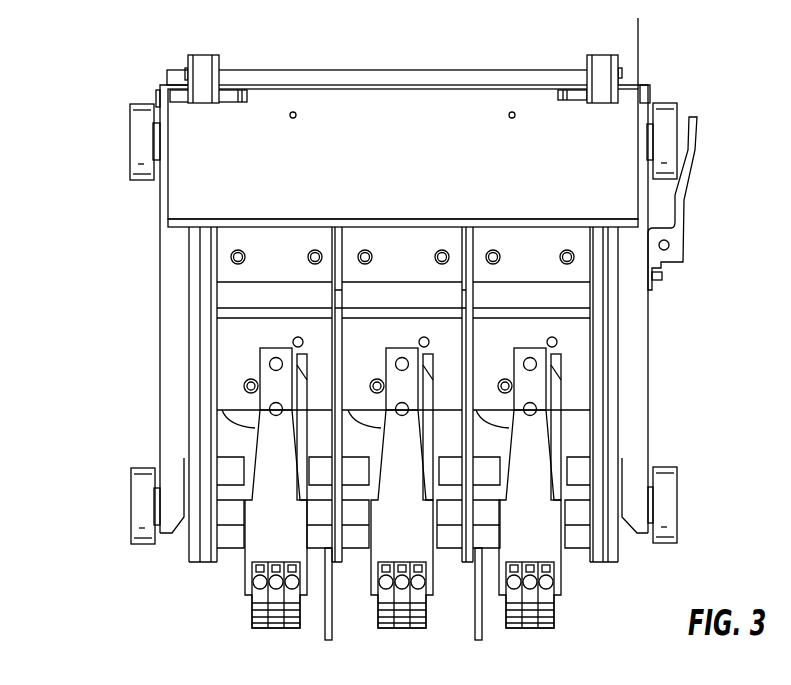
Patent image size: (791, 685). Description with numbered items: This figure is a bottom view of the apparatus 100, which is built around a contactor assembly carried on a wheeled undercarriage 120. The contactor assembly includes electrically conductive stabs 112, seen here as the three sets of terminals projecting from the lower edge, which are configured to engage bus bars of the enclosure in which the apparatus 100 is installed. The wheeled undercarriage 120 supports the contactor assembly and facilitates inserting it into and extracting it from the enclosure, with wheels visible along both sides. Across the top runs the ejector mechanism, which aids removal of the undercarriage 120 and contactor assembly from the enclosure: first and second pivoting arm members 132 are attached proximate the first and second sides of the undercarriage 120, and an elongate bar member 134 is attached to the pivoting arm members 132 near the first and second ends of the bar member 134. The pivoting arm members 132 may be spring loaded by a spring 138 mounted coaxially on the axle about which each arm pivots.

The apparatus 100 is at (364, 326).
The electrically conductive stabs 112 is at (552, 608).
The wheeled undercarriage 120 is at (648, 365).
The pivoting arm members 132 is at (188, 68).
The elongate bar member 134 is at (388, 73).
The spring 138 is at (580, 95).